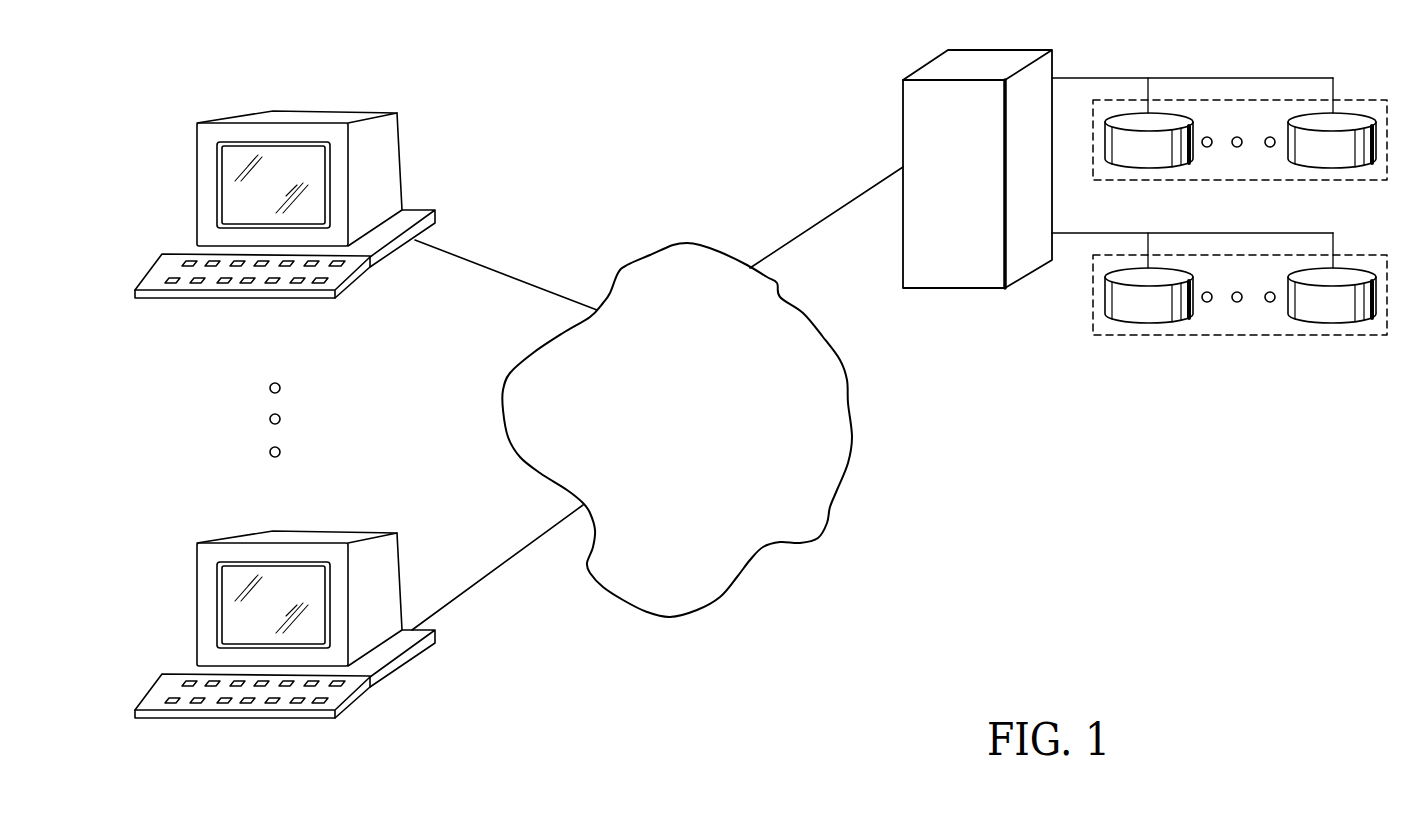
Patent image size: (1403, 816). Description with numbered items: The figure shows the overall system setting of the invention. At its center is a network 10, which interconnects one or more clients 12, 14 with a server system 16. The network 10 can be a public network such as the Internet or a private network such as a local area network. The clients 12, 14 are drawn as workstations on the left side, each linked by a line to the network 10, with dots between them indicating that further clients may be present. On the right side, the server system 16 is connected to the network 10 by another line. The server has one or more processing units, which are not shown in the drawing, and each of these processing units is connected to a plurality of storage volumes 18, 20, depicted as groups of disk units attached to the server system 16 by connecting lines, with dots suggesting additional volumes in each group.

The network 10 is at (738, 574).
The client 12 is at (402, 137).
The client 14 is at (402, 556).
The server system 16 is at (963, 288).
The storage volume 18 is at (1312, 181).
The storage volume 20 is at (1312, 336).